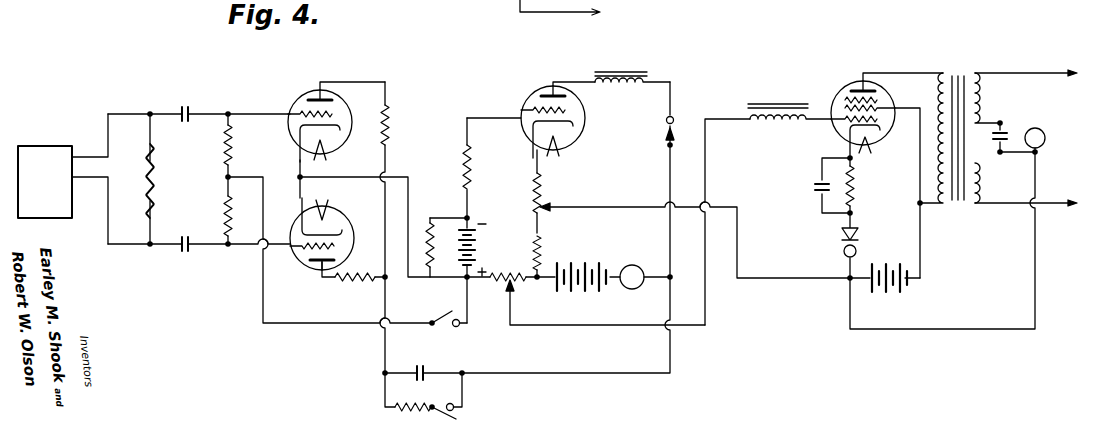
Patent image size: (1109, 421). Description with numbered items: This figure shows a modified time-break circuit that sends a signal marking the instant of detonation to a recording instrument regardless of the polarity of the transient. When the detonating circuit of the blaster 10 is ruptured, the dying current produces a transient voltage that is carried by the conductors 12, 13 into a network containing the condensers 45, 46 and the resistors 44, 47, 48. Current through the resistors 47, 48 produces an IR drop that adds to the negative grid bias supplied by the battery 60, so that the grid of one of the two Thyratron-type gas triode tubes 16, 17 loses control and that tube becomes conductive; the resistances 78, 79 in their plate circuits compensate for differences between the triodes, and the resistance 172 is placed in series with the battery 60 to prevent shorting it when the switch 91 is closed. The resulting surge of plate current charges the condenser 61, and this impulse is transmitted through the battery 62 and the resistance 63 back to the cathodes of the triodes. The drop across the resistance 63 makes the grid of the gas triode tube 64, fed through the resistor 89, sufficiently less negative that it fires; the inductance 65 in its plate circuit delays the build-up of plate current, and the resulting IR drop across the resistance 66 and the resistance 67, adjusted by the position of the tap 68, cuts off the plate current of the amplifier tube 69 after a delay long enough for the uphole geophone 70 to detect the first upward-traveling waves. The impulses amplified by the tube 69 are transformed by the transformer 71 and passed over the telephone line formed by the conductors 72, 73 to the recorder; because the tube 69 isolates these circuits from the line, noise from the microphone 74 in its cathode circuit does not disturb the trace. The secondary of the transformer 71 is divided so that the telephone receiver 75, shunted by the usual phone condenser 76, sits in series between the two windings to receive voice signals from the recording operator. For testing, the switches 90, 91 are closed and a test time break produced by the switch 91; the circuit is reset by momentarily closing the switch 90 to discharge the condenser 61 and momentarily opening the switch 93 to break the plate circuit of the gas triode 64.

The blaster 10 is at (40, 148).
The conductor 12 is at (85, 155).
The conductor 13 is at (80, 178).
The resistor 44 is at (156, 180).
The condenser 45 is at (184, 236).
The condenser 46 is at (190, 110).
The resistor 47 is at (232, 216).
The resistor 48 is at (233, 151).
The gas triode tube 16 is at (306, 85).
The gas triode tube 17 is at (363, 200).
The resistance 78 is at (392, 128).
The resistance 79 is at (344, 282).
The resistance 172 is at (430, 216).
The switch 91 is at (450, 310).
The condenser 61 is at (428, 368).
The switch 90 is at (460, 415).
The resistance 63 is at (504, 284).
The battery 60 is at (480, 250).
The resistor 89 is at (472, 166).
The gas triode tube 64 is at (595, 122).
The inductance 65 is at (628, 70).
The resistance 67 is at (545, 188).
The resistance 66 is at (541, 250).
The tap 68 is at (596, 206).
The battery 62 is at (592, 268).
The switch 93 is at (674, 134).
The uphole geophone 70 is at (768, 126).
The amplifier tube 69 is at (860, 78).
The microphone 74 is at (843, 249).
The transformer 71 is at (966, 66).
The conductor 73 is at (1004, 76).
The phone condenser 76 is at (1006, 130).
The telephone receiver 75 is at (1046, 138).
The conductor 72 is at (1004, 200).